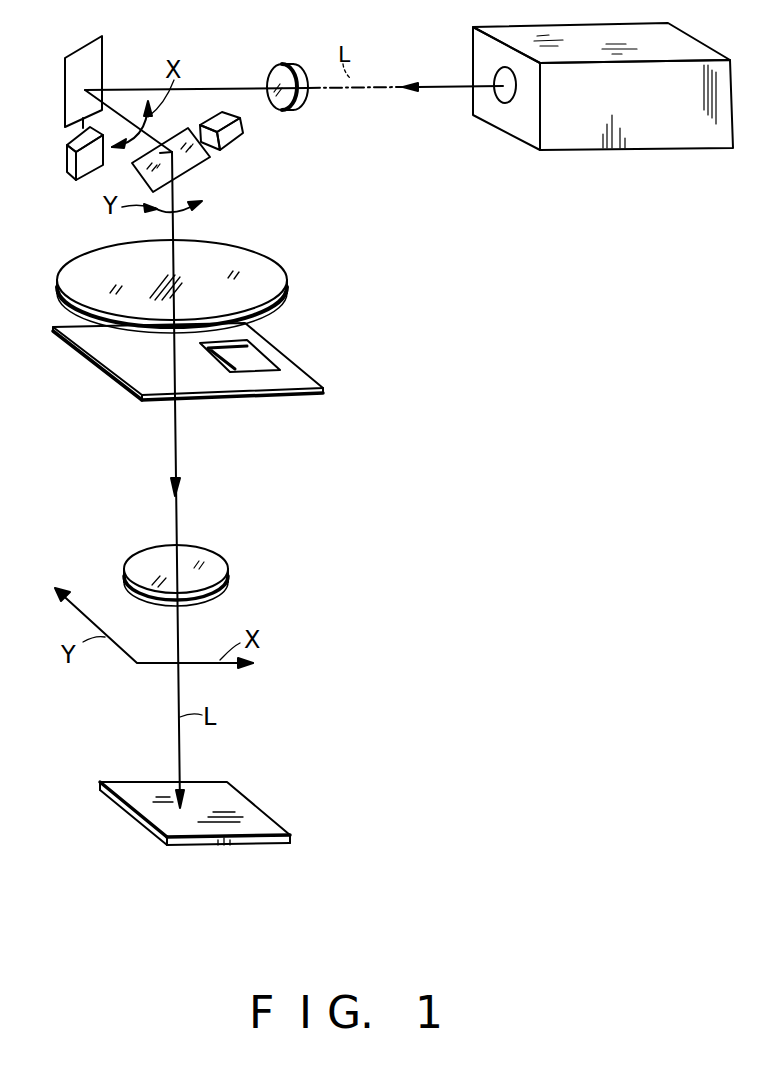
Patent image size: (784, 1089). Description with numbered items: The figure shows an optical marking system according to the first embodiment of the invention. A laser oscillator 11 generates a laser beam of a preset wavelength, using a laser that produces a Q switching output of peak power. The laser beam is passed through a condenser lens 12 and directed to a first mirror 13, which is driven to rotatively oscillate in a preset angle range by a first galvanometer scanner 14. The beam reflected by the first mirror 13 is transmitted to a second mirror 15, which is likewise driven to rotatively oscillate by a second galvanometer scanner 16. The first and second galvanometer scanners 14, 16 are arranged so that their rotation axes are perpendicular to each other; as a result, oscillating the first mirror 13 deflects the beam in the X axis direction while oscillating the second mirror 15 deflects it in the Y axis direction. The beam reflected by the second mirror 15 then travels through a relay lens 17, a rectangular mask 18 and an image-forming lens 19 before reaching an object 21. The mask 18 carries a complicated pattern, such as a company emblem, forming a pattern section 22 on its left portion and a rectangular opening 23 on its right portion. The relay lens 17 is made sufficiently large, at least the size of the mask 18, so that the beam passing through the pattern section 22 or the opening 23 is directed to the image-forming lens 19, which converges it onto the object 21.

The laser oscillator 11 is at (693, 46).
The condenser lens 12 is at (300, 107).
The first mirror 13 is at (97, 55).
The first galvanometer scanner 14 is at (70, 177).
The second mirror 15 is at (195, 160).
The second galvanometer scanner 16 is at (235, 142).
The relay lens 17 is at (265, 267).
The rectangular mask 18 is at (210, 370).
The image-forming lens 19 is at (213, 552).
The object 21 is at (260, 808).
The pattern section 22 is at (135, 378).
The rectangular opening 23 is at (255, 352).